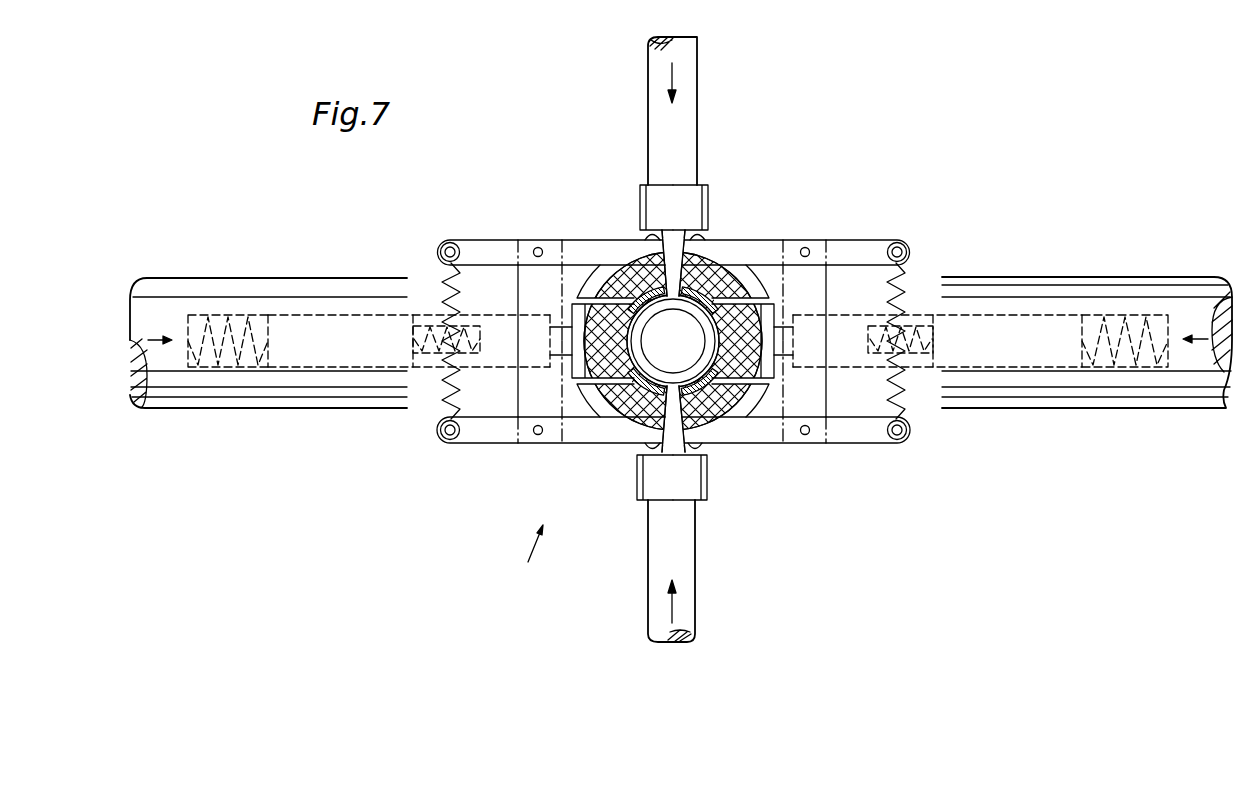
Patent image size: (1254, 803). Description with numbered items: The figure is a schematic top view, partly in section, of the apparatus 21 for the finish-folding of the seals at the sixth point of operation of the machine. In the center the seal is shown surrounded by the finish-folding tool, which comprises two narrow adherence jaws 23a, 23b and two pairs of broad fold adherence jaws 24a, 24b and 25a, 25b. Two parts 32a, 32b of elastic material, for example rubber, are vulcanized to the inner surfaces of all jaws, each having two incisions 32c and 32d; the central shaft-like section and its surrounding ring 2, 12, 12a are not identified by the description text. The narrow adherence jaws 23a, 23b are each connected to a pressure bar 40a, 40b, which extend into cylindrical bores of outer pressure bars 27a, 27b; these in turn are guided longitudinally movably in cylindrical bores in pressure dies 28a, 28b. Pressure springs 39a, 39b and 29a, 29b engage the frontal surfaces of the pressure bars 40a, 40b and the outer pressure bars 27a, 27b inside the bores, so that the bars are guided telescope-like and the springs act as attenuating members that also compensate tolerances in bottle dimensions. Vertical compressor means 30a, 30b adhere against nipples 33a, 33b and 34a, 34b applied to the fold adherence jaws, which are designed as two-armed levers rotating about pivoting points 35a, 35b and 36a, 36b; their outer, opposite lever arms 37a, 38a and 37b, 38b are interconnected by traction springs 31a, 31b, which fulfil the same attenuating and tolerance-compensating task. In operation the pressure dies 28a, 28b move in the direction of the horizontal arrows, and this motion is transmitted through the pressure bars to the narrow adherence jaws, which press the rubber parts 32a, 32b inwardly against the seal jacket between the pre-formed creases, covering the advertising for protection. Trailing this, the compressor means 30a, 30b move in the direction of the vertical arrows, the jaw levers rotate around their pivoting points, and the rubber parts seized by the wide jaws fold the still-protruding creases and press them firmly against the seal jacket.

The shaft 2 is at (697, 316).
The bearing bush 12 is at (645, 268).
The bearing ring 12a is at (628, 338).
The apparatus for the finish-folding of the seals 21 is at (527, 554).
The narrow adherence jaw 23a is at (573, 366).
The narrow adherence jaw 23b is at (768, 360).
The broad fold adherence jaw 24a is at (579, 240).
The broad fold adherence jaw 24b is at (769, 240).
The broad fold adherence jaw 25a is at (576, 444).
The broad fold adherence jaw 25b is at (746, 444).
The outer pressure bar 27a is at (317, 322).
The outer pressure bar 27b is at (1046, 322).
The pressure die 28a is at (290, 395).
The pressure die 28b is at (1032, 395).
The pressure spring 29a is at (214, 318).
The pressure spring 29b is at (1118, 318).
The compressor means 30a is at (691, 100).
The compressor means 30b is at (691, 578).
The traction spring 31a is at (446, 283).
The traction spring 31b is at (906, 287).
The part of elastic material 32a is at (643, 420).
The part of elastic material 32b is at (742, 300).
The incision 32c is at (652, 291).
The incision 32d is at (700, 282).
The nipple 33a is at (645, 222).
The nipple 33b is at (708, 222).
The nipple 34a is at (644, 480).
The nipple 34b is at (702, 480).
The pivoting point 35a is at (538, 247).
The pivoting point 35b is at (808, 248).
The pivoting point 36a is at (537, 435).
The pivoting point 36b is at (807, 435).
The outer lever arm 37a is at (481, 242).
The outer lever arm 37b is at (886, 243).
The outer lever arm 38a is at (470, 445).
The outer lever arm 38b is at (868, 445).
The pressure spring 39a is at (424, 370).
The pressure spring 39b is at (925, 370).
The pressure bar 40a is at (498, 358).
The pressure bar 40b is at (844, 352).